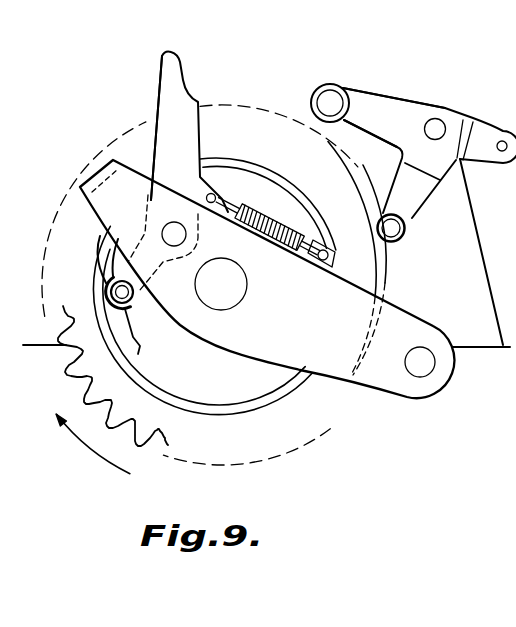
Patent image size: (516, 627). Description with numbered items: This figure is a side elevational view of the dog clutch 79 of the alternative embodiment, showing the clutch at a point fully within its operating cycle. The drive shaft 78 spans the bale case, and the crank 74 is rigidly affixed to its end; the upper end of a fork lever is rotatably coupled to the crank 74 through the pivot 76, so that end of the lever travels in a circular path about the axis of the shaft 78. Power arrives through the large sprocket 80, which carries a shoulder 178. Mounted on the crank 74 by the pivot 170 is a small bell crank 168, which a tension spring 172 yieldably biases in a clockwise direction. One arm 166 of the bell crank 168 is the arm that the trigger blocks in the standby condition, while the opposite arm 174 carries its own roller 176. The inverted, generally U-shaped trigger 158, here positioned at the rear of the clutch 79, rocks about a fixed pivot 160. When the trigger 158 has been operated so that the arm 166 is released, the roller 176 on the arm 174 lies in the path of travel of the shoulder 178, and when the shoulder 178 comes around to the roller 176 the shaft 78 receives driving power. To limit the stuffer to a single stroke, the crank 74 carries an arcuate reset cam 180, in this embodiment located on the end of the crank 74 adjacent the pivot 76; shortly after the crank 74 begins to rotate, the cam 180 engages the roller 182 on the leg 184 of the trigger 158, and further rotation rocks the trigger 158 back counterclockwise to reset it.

The crank 74 is at (326, 374).
The pivot 76 is at (424, 377).
The drive shaft 78 is at (234, 303).
The dog clutch 79 is at (261, 86).
The sprocket 80 is at (102, 362).
The trigger 158 is at (289, 192).
The fixed pivot 160 is at (444, 124).
The arm 166 is at (196, 132).
The bell crank 168 is at (148, 95).
The pivot 170 is at (162, 230).
The tension spring 172 is at (268, 222).
The arm 174 is at (435, 197).
The roller 176 is at (410, 239).
The shoulder 178 is at (136, 354).
The reset cam 180 is at (379, 283).
The roller 182 is at (333, 85).
The leg 184 is at (383, 97).